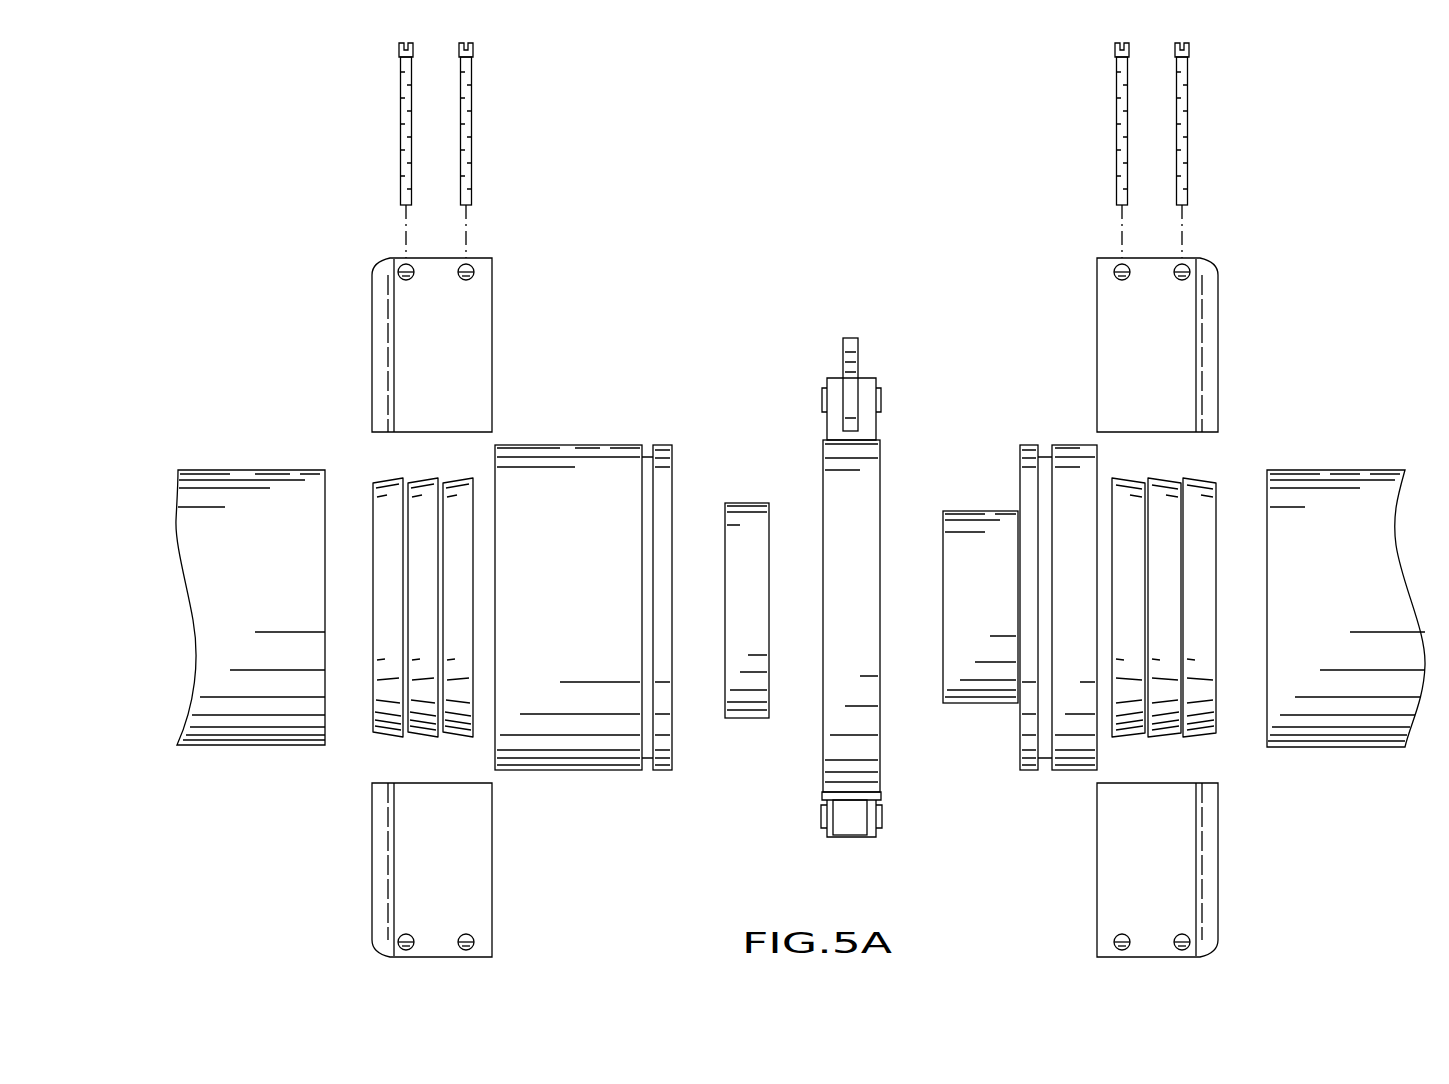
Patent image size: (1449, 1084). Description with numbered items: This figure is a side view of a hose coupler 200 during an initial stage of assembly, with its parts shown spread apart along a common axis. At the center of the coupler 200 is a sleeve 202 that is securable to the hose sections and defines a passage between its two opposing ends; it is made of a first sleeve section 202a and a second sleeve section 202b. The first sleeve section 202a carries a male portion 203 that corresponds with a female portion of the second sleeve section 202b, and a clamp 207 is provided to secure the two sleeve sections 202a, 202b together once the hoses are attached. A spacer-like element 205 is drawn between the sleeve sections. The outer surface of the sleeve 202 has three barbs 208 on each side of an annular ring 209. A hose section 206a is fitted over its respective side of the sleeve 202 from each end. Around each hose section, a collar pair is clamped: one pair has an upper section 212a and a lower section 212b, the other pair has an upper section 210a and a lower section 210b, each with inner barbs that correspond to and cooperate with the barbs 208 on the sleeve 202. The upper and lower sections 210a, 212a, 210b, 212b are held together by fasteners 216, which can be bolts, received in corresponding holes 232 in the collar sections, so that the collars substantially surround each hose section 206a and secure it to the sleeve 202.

The hose coupler 200 is at (1347, 180).
The sleeve 202 is at (673, 346).
The first sleeve section 202a is at (1070, 452).
The second sleeve section 202b is at (568, 458).
The male portion 203 is at (987, 692).
The spacer 205 is at (746, 512).
The first hose section 206a is at (193, 557).
The clamp 207 is at (833, 766).
The barbs 208 is at (457, 480).
The annular ring 209 is at (585, 760).
The upper section of collar pair 210a is at (1218, 323).
The lower section of collar pair 210b is at (1218, 857).
The upper section of collar pair 212a is at (383, 333).
The lower section of collar pair 212b is at (380, 855).
The fasteners 216 is at (400, 140).
The holes 232 is at (412, 940).